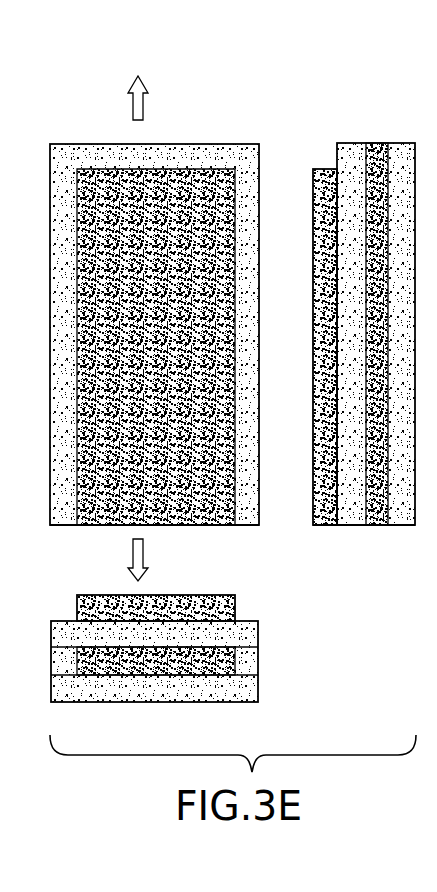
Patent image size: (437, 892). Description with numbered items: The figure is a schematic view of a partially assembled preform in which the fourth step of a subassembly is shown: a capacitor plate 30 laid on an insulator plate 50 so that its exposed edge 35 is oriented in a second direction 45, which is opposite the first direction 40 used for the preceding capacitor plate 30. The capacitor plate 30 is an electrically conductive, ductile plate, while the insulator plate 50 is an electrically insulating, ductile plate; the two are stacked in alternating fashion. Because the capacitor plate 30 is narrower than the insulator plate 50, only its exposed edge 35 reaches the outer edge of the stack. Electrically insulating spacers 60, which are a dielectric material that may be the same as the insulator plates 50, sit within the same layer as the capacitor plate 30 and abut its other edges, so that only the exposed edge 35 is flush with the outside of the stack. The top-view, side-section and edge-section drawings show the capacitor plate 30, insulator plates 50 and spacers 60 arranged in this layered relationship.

The capacitor plate 30 is at (208, 178).
The exposed edge 35 is at (100, 526).
The first direction 40 is at (143, 103).
The second direction 45 is at (143, 548).
The insulator plate 50 is at (87, 162).
The spacer 60 is at (376, 512).